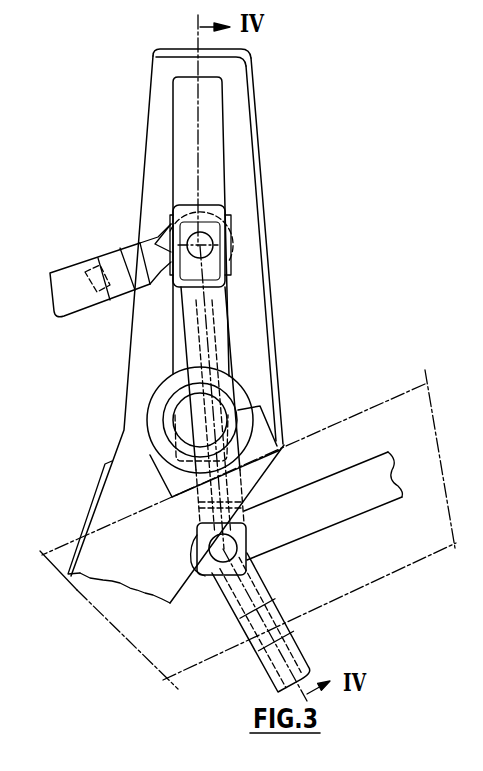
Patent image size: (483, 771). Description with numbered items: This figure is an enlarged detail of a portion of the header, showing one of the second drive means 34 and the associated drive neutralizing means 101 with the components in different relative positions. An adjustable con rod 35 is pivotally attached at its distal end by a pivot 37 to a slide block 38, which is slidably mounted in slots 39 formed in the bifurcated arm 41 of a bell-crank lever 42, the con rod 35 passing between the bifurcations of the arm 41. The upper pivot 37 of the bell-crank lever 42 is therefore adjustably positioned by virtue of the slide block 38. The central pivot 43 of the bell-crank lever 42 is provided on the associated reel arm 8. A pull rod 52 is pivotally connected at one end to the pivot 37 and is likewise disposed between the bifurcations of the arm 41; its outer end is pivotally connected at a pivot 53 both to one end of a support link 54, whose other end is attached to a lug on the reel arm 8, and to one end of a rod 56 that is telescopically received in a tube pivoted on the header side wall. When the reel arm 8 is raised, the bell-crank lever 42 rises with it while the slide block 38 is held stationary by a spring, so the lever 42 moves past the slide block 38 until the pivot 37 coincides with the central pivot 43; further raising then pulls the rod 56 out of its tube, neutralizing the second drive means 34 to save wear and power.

The reel arm 8 is at (397, 571).
The second drive means 34 is at (302, 217).
The adjustable con rod 35 is at (62, 272).
The pivot 37 is at (214, 247).
The slide block 38 is at (208, 205).
The slots 39 is at (217, 125).
The bifurcated arm 41 is at (237, 100).
The bell-crank lever 42 is at (267, 53).
The central pivot 43 is at (232, 405).
The pull rod 52 is at (218, 333).
The pivot 53 is at (233, 549).
The support link 54 is at (351, 513).
The rod 56 is at (307, 645).
The drive neutralizing means 101 is at (383, 363).